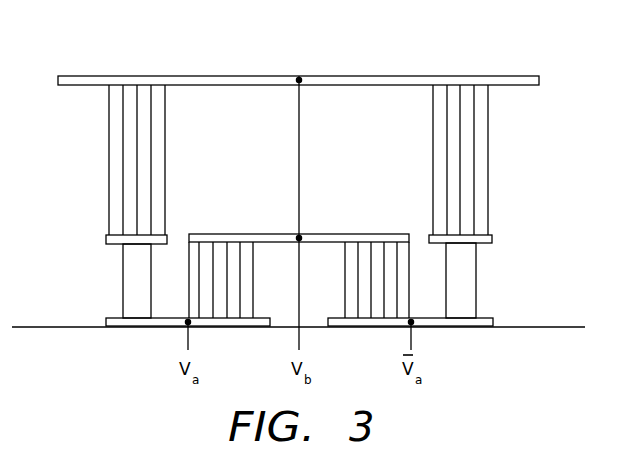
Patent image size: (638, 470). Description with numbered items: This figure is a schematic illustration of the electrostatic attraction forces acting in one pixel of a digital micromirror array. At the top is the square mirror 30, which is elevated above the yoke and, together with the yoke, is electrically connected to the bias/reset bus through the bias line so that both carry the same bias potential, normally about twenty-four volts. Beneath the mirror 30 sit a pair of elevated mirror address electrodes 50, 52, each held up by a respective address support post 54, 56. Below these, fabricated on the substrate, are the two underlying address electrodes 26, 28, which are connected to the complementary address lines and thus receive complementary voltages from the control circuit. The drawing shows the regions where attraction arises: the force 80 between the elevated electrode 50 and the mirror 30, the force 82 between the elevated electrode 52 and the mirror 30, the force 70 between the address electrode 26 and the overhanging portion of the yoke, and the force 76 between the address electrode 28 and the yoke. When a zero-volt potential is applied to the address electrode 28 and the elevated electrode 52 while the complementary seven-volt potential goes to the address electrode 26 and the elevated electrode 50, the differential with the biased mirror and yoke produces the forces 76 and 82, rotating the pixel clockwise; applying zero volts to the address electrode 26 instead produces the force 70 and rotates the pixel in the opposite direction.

The mirror 30 is at (82, 76).
The electrostatic attraction force 80 is at (165, 175).
The electrostatic attraction force 82 is at (433, 173).
The elevated mirror address electrode 50 is at (106, 238).
The elevated mirror address electrode 52 is at (492, 238).
The address support post 54 is at (123, 282).
The address support post 56 is at (476, 281).
The address electrode 26 is at (110, 318).
The address electrode 28 is at (488, 318).
The electrostatic attraction force 70 is at (255, 255).
The electrostatic attraction force 76 is at (343, 256).